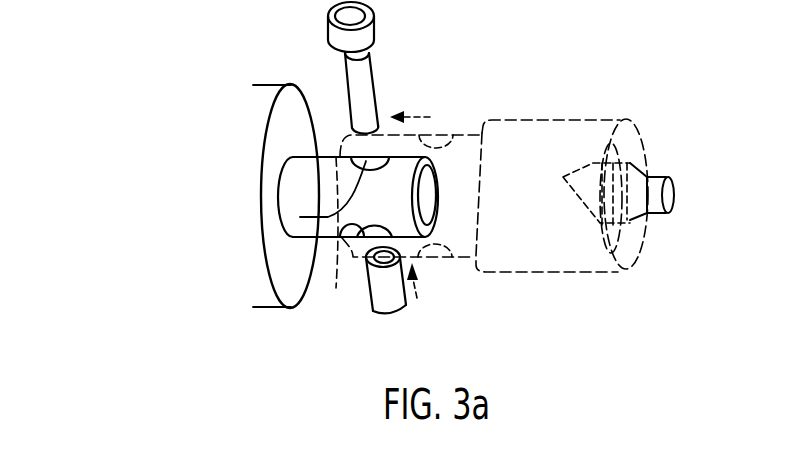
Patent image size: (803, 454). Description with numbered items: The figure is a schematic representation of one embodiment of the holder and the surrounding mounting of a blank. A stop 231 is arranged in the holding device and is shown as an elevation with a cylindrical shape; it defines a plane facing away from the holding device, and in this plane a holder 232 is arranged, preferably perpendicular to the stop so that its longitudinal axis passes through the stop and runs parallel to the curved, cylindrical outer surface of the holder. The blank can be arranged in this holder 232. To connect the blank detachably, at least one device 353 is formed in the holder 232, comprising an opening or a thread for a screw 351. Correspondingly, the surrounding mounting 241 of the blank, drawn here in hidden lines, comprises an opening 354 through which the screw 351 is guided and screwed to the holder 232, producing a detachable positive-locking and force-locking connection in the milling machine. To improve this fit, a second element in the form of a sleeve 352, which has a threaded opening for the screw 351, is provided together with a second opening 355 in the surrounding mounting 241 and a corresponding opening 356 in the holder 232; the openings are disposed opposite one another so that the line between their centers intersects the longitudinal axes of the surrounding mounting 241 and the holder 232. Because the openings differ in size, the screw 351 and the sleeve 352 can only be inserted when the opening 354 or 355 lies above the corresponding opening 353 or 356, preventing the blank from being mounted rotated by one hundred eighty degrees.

The stop 231 is at (290, 100).
The holder 232 is at (292, 182).
The surrounding mounting 241 is at (478, 272).
The screw 351 is at (378, 21).
The sleeve 352 is at (392, 308).
The device for establishing a detachable connection 353 is at (300, 217).
The opening 354 is at (437, 142).
The opening 355 is at (437, 258).
The opening 356 is at (337, 238).